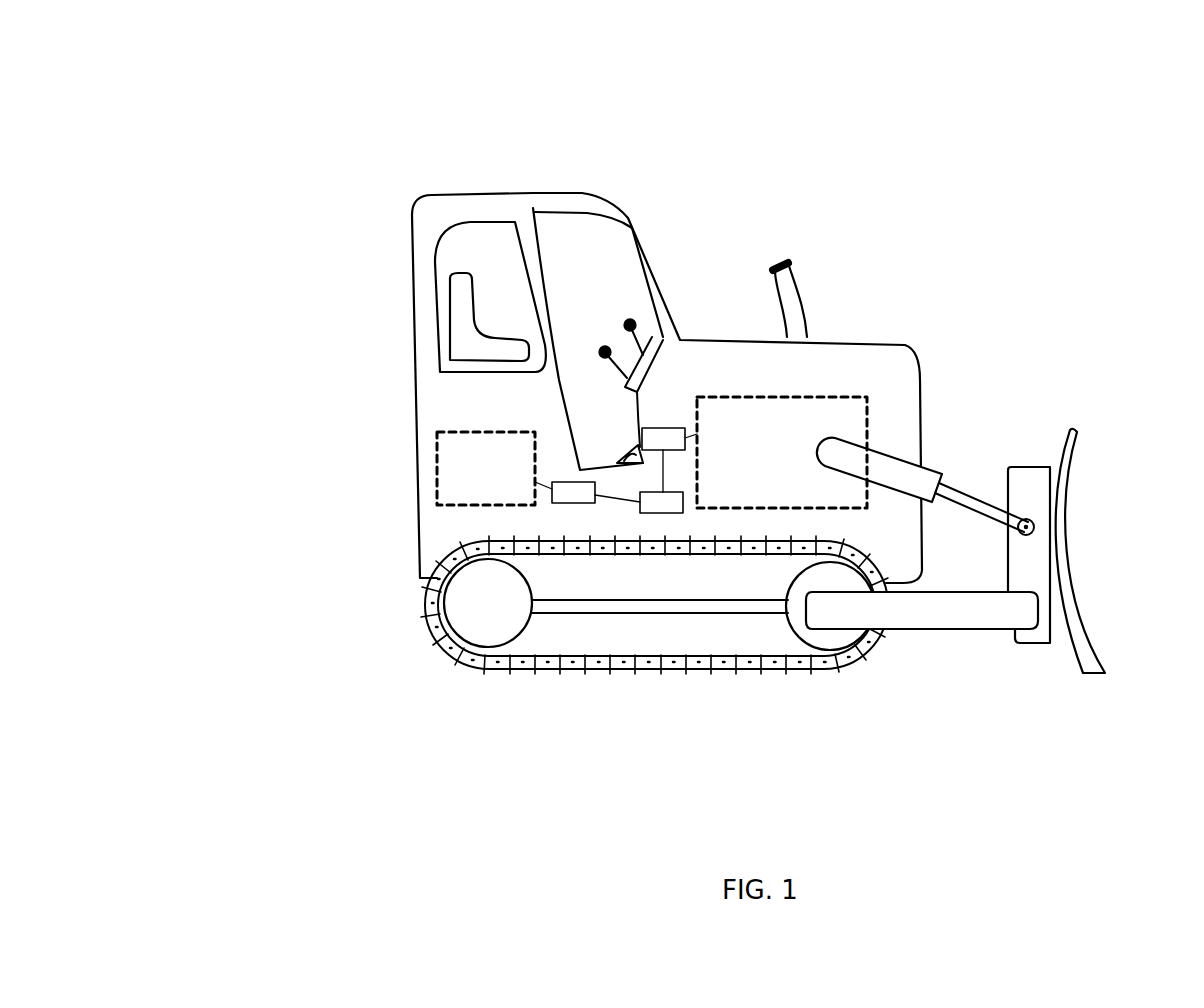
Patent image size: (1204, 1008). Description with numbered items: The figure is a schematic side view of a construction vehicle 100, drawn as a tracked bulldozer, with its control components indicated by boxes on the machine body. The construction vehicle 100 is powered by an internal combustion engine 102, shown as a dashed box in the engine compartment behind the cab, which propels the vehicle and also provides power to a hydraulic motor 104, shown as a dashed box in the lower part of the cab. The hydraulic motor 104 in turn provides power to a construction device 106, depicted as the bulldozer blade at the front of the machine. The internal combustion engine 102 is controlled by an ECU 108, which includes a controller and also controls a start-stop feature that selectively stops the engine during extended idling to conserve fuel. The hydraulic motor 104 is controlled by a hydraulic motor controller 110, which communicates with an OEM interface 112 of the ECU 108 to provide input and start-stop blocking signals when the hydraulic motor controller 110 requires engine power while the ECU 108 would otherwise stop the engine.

The construction vehicle 100 is at (300, 92).
The internal combustion engine 102 is at (782, 452).
The hydraulic motor 104 is at (486, 468).
The construction device 106 is at (1075, 437).
The ECU 108 is at (669, 460).
The hydraulic motor controller 110 is at (587, 492).
The OEM interface 112 is at (661, 502).